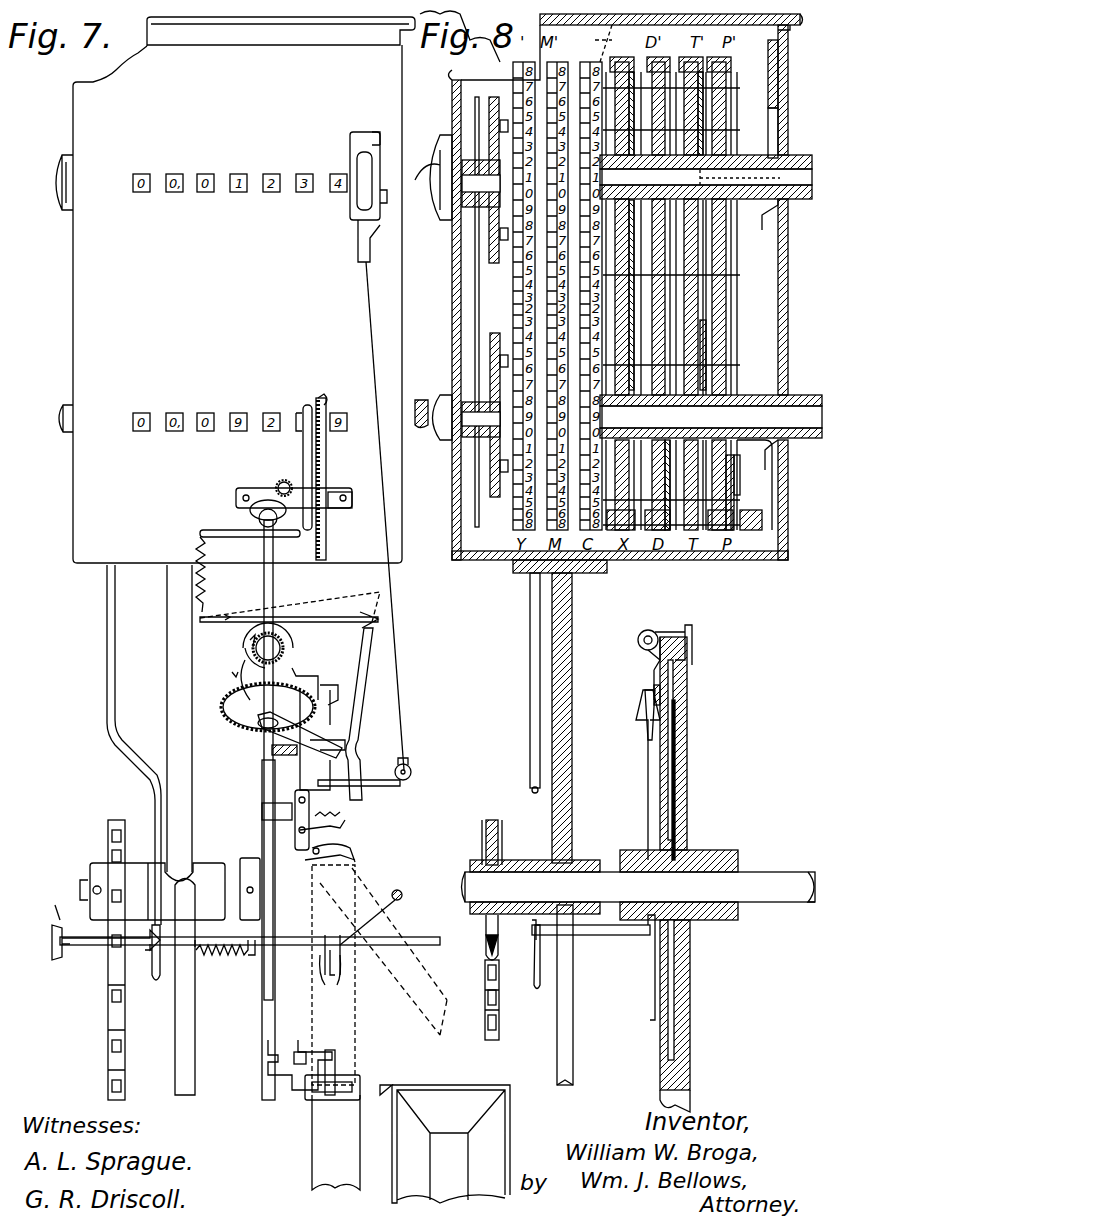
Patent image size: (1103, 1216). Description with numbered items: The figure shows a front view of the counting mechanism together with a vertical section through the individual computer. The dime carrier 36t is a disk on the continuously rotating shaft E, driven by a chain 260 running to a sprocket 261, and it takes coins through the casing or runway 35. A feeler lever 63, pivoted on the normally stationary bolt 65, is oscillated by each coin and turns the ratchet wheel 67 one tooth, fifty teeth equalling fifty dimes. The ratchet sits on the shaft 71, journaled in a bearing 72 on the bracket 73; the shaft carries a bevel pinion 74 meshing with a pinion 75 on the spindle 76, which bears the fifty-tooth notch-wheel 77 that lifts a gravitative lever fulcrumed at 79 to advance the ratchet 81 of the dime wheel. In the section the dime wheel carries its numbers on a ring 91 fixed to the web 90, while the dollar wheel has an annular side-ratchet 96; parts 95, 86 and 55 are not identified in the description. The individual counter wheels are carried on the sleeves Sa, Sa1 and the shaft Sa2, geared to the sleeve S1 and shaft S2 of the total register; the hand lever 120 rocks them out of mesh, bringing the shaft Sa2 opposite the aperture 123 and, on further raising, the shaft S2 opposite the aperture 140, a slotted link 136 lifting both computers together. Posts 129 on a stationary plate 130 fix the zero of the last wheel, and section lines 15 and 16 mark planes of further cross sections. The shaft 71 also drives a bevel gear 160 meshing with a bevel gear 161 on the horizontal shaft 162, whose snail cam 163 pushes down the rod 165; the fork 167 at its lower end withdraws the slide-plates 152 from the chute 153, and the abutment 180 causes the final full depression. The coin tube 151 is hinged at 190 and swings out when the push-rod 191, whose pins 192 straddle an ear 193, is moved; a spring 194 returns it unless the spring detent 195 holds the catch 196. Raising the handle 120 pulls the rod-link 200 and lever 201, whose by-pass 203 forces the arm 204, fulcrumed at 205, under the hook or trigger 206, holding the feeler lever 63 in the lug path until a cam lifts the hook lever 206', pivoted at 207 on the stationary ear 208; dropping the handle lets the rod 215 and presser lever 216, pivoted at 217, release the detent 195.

In FIG. 7, the hand lever 120 is at (362, 175).
In FIG. 7, the rod-link 200 is at (376, 352).
In FIG. 7, the fulcrum of gravitative lever 79 is at (326, 400).
In FIG. 7, the notch-wheel 77 is at (326, 476).
In FIG. 7, the spindle 76 is at (340, 495).
In FIG. 7, the bevel pinion 75 is at (284, 480).
In FIG. 7, the bevel pinion 74 is at (250, 515).
In FIG. 7, the bracket 73 is at (302, 440).
In FIG. 7, the bearing 72 is at (262, 528).
In FIG. 7, the shaft 71 is at (264, 578).
In FIG. 7, the pivot of hook lever 207 is at (222, 577).
In FIG. 7, the hook or trigger 206 is at (325, 618).
In FIG. 7, the hook lever 206' is at (290, 597).
In FIG. 7, the bevel gear 160 is at (288, 633).
In FIG. 7, the bevel gear 161 is at (282, 648).
In FIG. 7, the stationary ear 208 is at (240, 655).
In FIG. 7, the snail cam 163 is at (245, 672).
In FIG. 7, the ratchet wheel 67 is at (268, 707).
In FIG. 7, the bolt 65 is at (268, 735).
In FIG. 7, the feeler lever 63 is at (330, 737).
In FIG. 7, the arm 204 is at (370, 700).
In FIG. 7, the by-pass 203 is at (398, 775).
In FIG. 7, the lever 201 is at (411, 775).
In FIG. 7, the rod 165 is at (262, 795).
In FIG. 7, the fulcrum of arm 205 is at (348, 810).
In FIG. 7, the hinge 190 is at (352, 858).
In FIG. 7, the coin tube 151 is at (360, 1032).
In FIG. 7, the ear 193 is at (393, 915).
In FIG. 7, the push-rod 191 is at (250, 943).
In FIG. 7, the spring detent 195 is at (88, 923).
In FIG. 7, the catch 196 is at (170, 889).
In FIG. 7, the sprocket 261 is at (108, 848).
In FIG. 8, the sprocket 261 is at (486, 835).
In FIG. 7, the chain 260 is at (108, 1028).
In FIG. 8, the chain 260 is at (500, 1040).
In FIG. 7, the rod 215 is at (108, 730).
In FIG. 7, the presser lever 216 is at (150, 960).
In FIG. 8, the presser lever 216 is at (536, 972).
In FIG. 7, the spring 194 is at (215, 987).
In FIG. 7, the pins 192 is at (337, 985).
In FIG. 7, the fork 167 is at (264, 1050).
In FIG. 7, the slide-plates 152 is at (312, 1110).
In FIG. 7, the chute 153 is at (336, 1142).
In FIG. 7, the carrier shaft E is at (407, 857).
In FIG. 8, the carrier shaft E is at (639, 885).
In FIG. 8, the rod 86 is at (640, 70).
In FIG. 8, the frame 15 is at (608, 592).
In FIG. 8, the sleeve Sa is at (780, 155).
In FIG. 8, the sleeve Sa1 is at (790, 185).
In FIG. 8, the shaft Sa2 is at (788, 200).
In FIG. 8, the sleeve S1 is at (785, 398).
In FIG. 8, the shaft S2 is at (790, 440).
In FIG. 8, the stationary plate 130 is at (490, 250).
In FIG. 8, the slotted link 136 is at (477, 305).
In FIG. 8, the aperture 140 is at (462, 405).
In FIG. 8, the posts 129 is at (500, 125).
In FIG. 8, the aperture 123 is at (462, 150).
In FIG. 8, the annular side-ratchet 96 is at (655, 135).
In FIG. 8, the wheel 95 is at (660, 245).
In FIG. 8, the wheel web 90 is at (715, 485).
In FIG. 8, the ratchet 81 is at (520, 520).
In FIG. 8, the frame 16 is at (672, 560).
In FIG. 8, the ring 91 is at (700, 560).
In FIG. 8, the casing or runway 35 is at (688, 740).
In FIG. 8, the carrier 36t is at (676, 770).
In FIG. 8, the rod 55 is at (647, 802).
In FIG. 8, the abutment 180 is at (656, 670).
In FIG. 8, the horizontal shaft 162 is at (650, 632).
In FIG. 8, the pivot of presser lever 217 is at (598, 940).